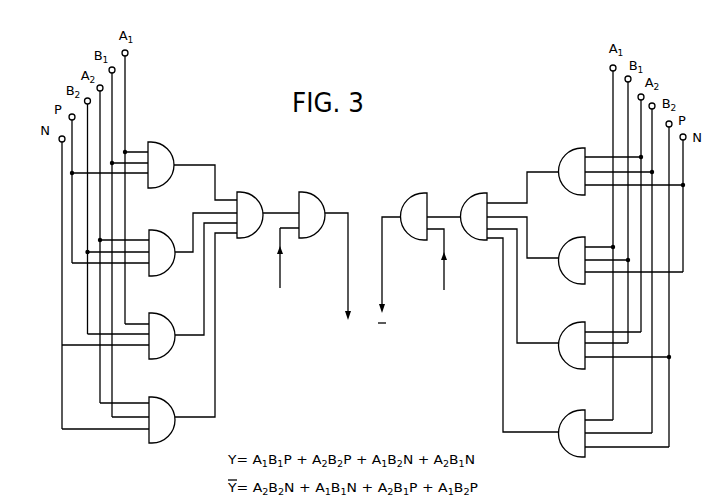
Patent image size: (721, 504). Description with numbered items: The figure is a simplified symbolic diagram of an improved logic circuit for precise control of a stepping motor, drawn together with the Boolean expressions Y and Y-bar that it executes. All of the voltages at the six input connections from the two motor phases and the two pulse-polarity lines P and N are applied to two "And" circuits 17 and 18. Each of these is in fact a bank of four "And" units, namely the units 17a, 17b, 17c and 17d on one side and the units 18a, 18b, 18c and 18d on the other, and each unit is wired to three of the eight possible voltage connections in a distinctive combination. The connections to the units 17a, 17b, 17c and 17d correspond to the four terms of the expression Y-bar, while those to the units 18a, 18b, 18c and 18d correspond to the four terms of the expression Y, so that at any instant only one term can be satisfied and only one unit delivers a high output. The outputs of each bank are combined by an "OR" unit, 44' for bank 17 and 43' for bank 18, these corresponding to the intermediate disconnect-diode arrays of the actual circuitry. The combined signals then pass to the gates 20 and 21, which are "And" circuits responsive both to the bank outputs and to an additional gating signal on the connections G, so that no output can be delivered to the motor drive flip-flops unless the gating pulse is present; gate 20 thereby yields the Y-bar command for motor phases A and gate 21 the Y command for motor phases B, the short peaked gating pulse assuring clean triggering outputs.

The "And" circuit 17 is at (558, 122).
The "And" unit 17a is at (568, 153).
The "And" unit 17b is at (578, 240).
The "And" unit 17c is at (578, 323).
The "And" unit 17d is at (578, 410).
The "And" circuit 18 is at (171, 117).
The "And" unit 18a is at (170, 150).
The "And" unit 18b is at (153, 230).
The "And" unit 18c is at (158, 312).
The "And" unit 18d is at (162, 397).
The gate 20 is at (420, 192).
The gate 21 is at (306, 190).
The "OR" unit 43' is at (268, 194).
The "OR" unit 44' is at (509, 288).